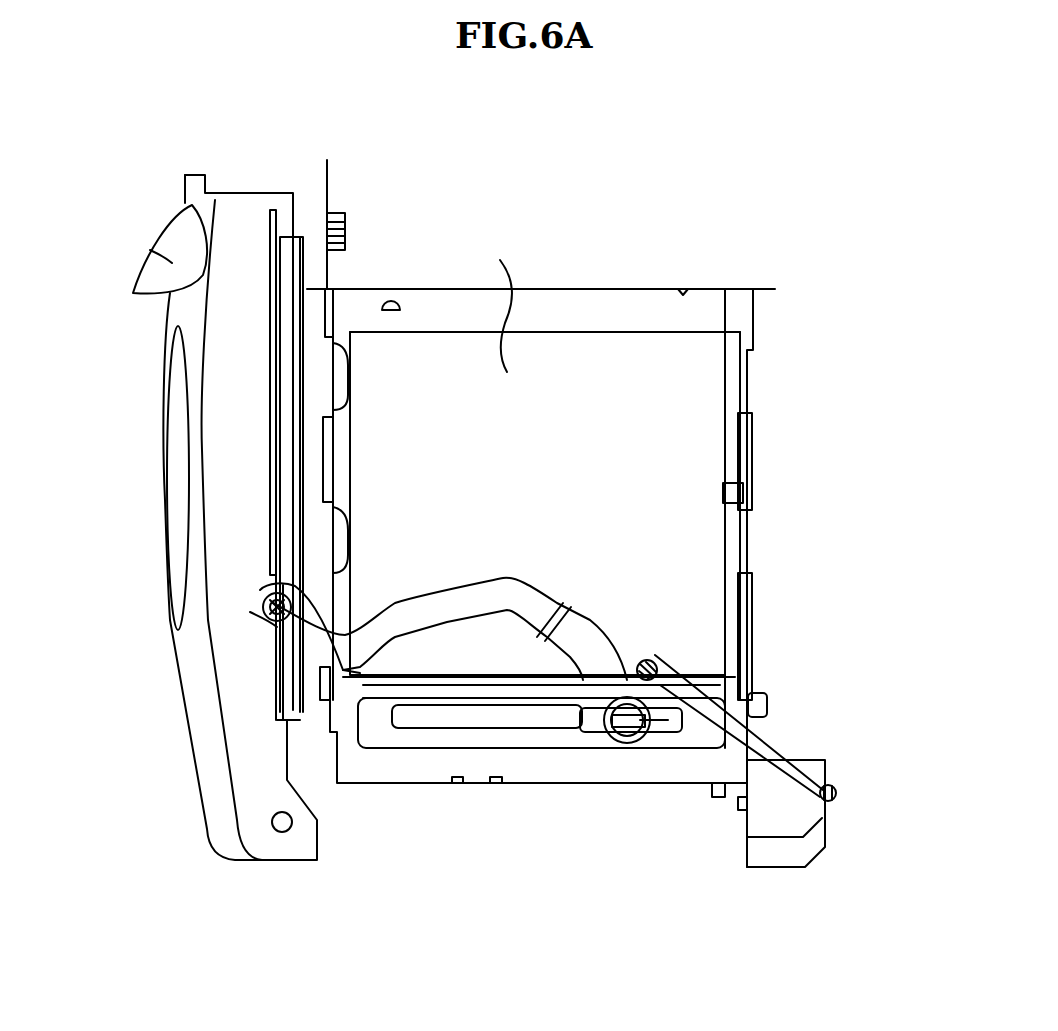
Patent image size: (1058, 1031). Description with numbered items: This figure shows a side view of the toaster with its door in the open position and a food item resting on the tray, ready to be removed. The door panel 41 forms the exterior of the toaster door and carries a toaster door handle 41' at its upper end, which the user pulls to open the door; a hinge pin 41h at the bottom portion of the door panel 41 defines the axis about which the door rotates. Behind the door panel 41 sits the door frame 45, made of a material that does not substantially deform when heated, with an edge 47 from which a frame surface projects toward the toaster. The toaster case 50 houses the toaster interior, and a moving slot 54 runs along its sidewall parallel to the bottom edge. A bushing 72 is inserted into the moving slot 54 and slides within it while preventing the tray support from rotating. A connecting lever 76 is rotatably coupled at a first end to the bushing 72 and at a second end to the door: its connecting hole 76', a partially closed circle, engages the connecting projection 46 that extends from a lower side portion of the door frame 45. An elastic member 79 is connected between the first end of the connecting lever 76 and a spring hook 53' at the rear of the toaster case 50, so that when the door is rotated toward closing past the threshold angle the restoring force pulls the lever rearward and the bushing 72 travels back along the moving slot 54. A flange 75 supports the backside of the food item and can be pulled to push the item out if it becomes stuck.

The door panel 41 is at (202, 517).
The toaster door handle 41' is at (133, 249).
The hinge pin 41h is at (272, 822).
The door frame 45 is at (307, 260).
The connecting projection 46 is at (277, 627).
The edge 47 is at (277, 213).
The toaster case 50 is at (600, 310).
The spring hook 53' is at (890, 804).
The moving slot 54 is at (460, 717).
The bushing 72 is at (660, 730).
The flange 75 is at (742, 537).
The connecting lever 76 is at (372, 611).
The connecting hole 76' is at (166, 638).
The elastic member 79 is at (763, 747).